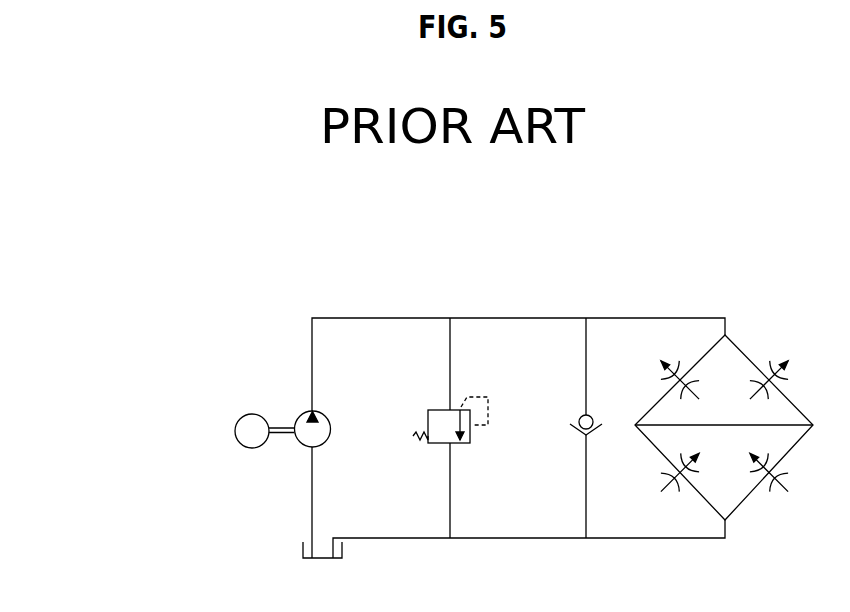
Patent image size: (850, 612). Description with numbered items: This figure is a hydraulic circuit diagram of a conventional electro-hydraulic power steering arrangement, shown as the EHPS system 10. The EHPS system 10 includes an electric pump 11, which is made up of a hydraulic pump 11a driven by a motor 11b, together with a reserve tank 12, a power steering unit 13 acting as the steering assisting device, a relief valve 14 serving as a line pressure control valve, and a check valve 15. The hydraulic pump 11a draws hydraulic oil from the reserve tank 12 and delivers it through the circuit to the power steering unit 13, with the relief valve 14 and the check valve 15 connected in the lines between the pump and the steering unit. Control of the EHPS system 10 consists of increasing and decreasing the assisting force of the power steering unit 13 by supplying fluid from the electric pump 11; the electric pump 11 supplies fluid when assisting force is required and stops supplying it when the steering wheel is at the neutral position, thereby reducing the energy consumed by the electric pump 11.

The EHPS system 10 is at (193, 328).
The electric pump 11 is at (290, 418).
The hydraulic pump 11a is at (325, 432).
The motor 11b is at (240, 413).
The reserve tank 12 is at (303, 552).
The power steering unit 13 is at (753, 365).
The relief valve 14 is at (450, 435).
The check valve 15 is at (578, 418).